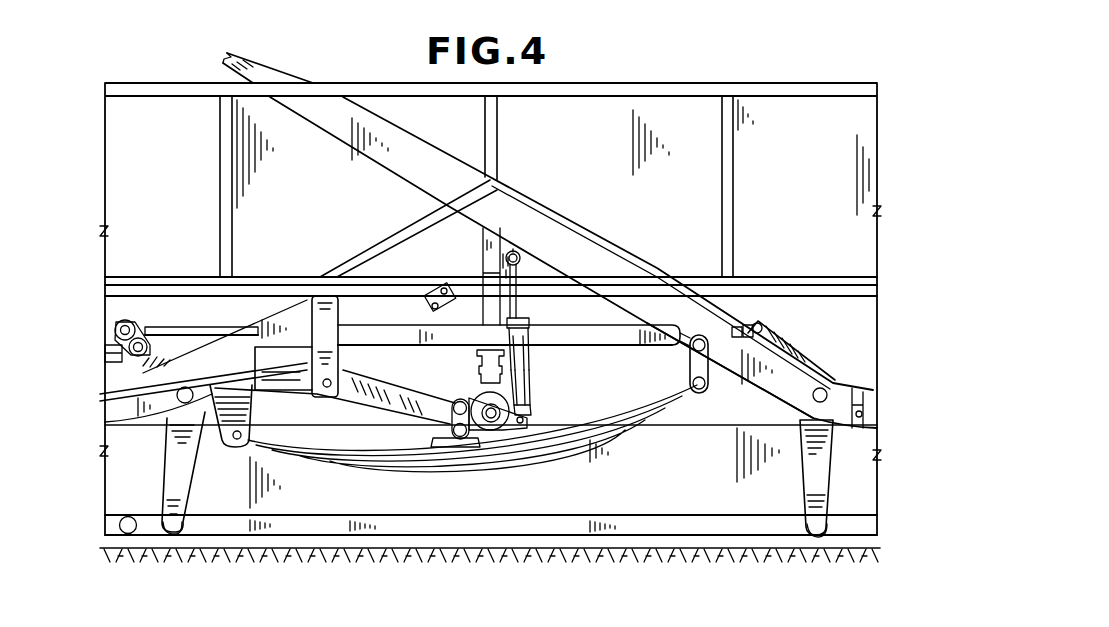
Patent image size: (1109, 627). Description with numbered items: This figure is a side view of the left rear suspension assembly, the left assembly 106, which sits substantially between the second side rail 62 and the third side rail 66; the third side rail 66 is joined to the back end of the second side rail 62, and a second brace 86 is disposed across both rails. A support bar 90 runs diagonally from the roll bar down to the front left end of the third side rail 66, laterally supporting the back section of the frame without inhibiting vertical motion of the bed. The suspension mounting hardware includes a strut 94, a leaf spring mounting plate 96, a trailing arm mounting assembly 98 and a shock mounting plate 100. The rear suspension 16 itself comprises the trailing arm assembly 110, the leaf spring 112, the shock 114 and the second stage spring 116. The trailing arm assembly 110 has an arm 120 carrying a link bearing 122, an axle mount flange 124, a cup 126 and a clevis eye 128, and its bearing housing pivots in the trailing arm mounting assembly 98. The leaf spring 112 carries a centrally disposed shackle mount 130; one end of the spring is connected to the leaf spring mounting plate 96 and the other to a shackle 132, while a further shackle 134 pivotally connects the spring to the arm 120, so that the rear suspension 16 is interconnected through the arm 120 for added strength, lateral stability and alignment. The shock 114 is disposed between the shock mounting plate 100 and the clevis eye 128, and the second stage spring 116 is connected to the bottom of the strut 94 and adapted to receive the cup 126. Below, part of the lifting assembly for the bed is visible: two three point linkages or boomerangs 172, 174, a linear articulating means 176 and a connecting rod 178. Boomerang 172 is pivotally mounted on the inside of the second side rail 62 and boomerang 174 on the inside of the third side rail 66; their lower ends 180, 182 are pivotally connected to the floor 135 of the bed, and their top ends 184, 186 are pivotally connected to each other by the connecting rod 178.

The rear suspension 16 is at (583, 314).
The second side rail 62 is at (227, 360).
The third side rail 66 is at (670, 313).
The second brace 86 is at (367, 327).
The support bar 90 is at (400, 147).
The strut 94 is at (505, 235).
The leaf spring mounting plate 96 is at (233, 449).
The trailing arm mounting assembly 98 is at (313, 383).
The shock mounting plate 100 is at (540, 295).
The left assembly 106 is at (738, 181).
The trailing arm assembly 110 is at (413, 418).
The leaf spring 112 is at (667, 413).
The shock 114 is at (528, 362).
The second stage spring 116 is at (529, 387).
The arm 120 is at (390, 385).
The link bearing 122 is at (490, 447).
The axle mount flange 124 is at (521, 410).
The cup 126 is at (477, 395).
The clevis eye 128 is at (520, 447).
The shackle mount 130 is at (463, 442).
The shackle 132 is at (713, 355).
The shackle 134 is at (433, 428).
The floor 135 is at (542, 530).
The boomerang 172 is at (170, 487).
The boomerang 174 is at (820, 487).
The linear articulating means 176 is at (116, 334).
The connecting rod 178 is at (182, 332).
The lower end 180 is at (173, 537).
The lower end 182 is at (815, 537).
The top end 184 is at (123, 320).
The top end 186 is at (759, 324).